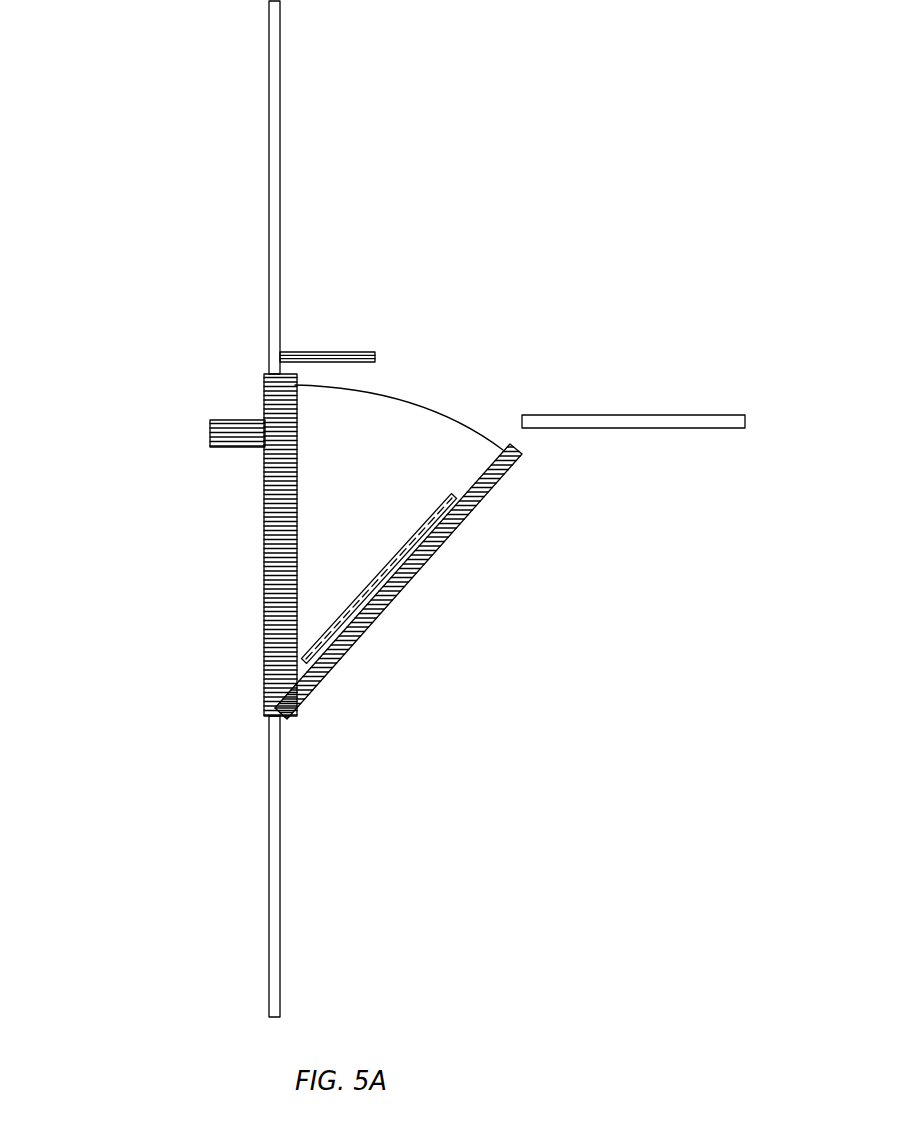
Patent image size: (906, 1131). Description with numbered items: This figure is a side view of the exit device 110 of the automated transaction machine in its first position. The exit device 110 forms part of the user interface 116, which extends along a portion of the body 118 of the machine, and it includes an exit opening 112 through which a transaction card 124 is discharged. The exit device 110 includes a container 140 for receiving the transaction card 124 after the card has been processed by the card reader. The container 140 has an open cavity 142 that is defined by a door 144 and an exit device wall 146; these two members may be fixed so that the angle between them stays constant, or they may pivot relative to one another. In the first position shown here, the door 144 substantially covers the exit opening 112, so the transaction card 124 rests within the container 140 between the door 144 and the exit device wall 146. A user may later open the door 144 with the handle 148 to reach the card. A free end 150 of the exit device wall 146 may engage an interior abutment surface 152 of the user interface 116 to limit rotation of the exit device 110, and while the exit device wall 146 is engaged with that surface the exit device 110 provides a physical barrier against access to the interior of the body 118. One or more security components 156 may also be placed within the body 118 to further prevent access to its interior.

The exit device 110 is at (116, 136).
The user interface 116 is at (248, 132).
The exit opening 112 is at (306, 407).
The interior abutment surface 152 is at (296, 368).
The security component 156 is at (362, 352).
The container 140 is at (410, 403).
The open cavity 142 is at (448, 434).
The handle 148 is at (210, 432).
The door 144 is at (268, 494).
The free end 150 is at (525, 453).
The transaction card 124 is at (480, 508).
The exit device wall 146 is at (393, 598).
The body 118 is at (581, 744).